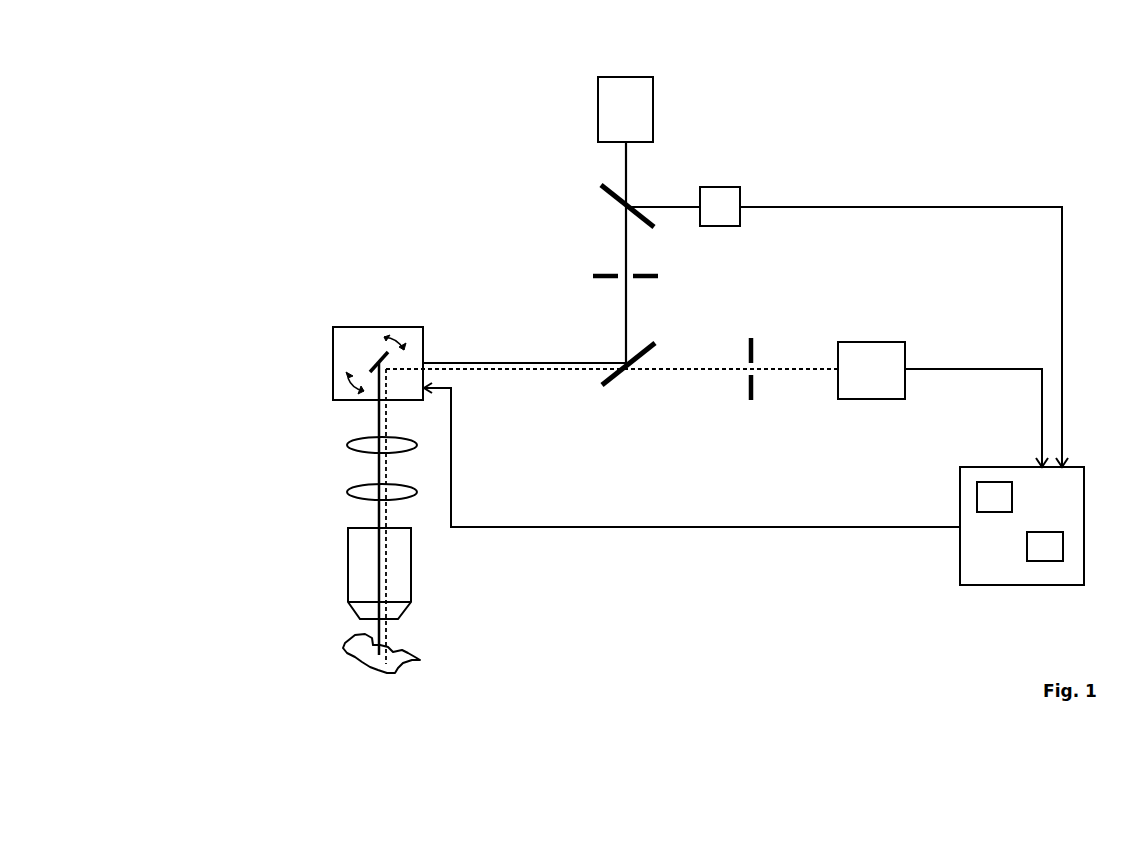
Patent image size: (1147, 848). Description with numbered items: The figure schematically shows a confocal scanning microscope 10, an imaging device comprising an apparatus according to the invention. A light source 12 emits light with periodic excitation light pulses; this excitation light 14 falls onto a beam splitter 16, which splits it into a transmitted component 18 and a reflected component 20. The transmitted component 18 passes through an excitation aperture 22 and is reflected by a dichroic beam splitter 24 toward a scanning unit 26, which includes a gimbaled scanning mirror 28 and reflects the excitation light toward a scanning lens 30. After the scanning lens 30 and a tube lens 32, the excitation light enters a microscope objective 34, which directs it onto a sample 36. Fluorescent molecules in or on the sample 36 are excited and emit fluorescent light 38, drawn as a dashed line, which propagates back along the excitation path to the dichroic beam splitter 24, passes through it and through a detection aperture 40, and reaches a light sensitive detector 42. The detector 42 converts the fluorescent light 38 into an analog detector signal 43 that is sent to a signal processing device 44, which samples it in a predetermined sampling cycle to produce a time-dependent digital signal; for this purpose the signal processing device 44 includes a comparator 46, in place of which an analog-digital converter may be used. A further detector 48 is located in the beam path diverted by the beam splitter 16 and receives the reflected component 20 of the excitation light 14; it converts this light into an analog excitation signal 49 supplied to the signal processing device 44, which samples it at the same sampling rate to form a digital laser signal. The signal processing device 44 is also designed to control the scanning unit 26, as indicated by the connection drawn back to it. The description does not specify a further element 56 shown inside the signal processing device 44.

The confocal scanning microscope 10 is at (318, 143).
The light source 12 is at (622, 77).
The excitation light 14 is at (626, 163).
The beam splitter 16 is at (617, 200).
The transmitted component 18 is at (626, 250).
The reflected component 20 is at (668, 207).
The excitation aperture 22 is at (593, 276).
The dichroic beam splitter 24 is at (620, 377).
The scanning unit 26 is at (332, 335).
The gimbaled scanning mirror 28 is at (370, 370).
The scanning lens 30 is at (350, 442).
The tube lens 32 is at (352, 487).
The microscope objective 34 is at (360, 565).
The sample 36 is at (413, 665).
The fluorescent light 38 is at (682, 370).
The detection aperture 40 is at (755, 390).
The light sensitive detector 42 is at (858, 342).
The analog detector signal 43 is at (933, 369).
The signal processing device 44 is at (970, 585).
The comparator 46 is at (977, 502).
The further detector 48 is at (733, 187).
The analog excitation signal 49 is at (1063, 247).
The memory 56 is at (1063, 552).